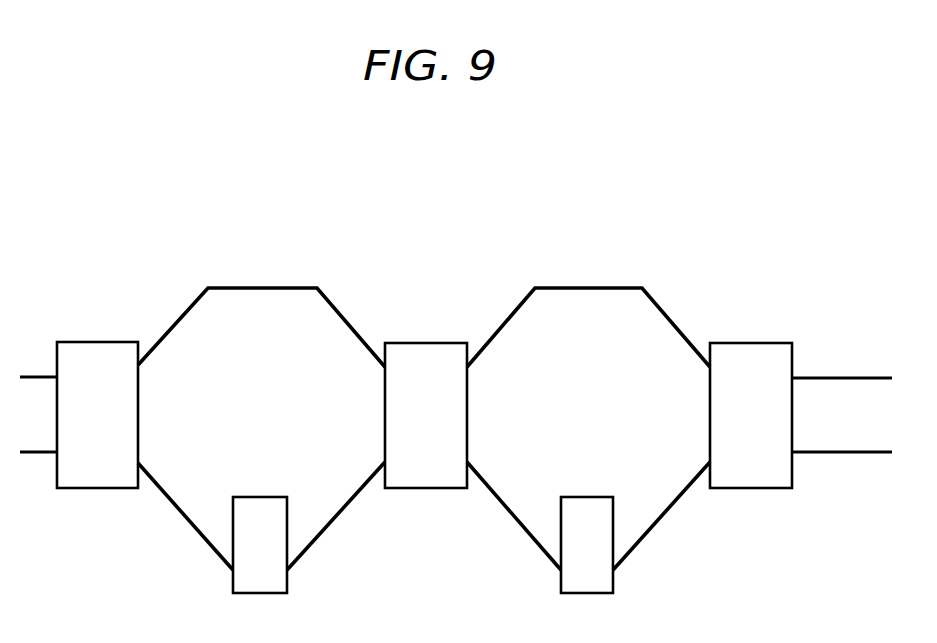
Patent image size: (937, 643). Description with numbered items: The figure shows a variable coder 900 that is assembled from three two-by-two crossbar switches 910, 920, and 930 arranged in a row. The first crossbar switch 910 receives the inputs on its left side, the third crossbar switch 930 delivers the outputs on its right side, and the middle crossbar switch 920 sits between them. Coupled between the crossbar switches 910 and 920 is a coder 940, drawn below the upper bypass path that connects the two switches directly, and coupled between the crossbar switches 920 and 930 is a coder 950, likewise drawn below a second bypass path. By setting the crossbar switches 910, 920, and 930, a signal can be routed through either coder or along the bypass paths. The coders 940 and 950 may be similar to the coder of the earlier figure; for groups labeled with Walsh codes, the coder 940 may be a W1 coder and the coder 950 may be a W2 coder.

The variable coder 900 is at (636, 174).
The 2×2 crossbar switch 910 is at (112, 342).
The 2×2 crossbar switch 920 is at (454, 343).
The 2×2 crossbar switch 930 is at (779, 343).
The coder 940 is at (266, 497).
The coder 950 is at (601, 497).